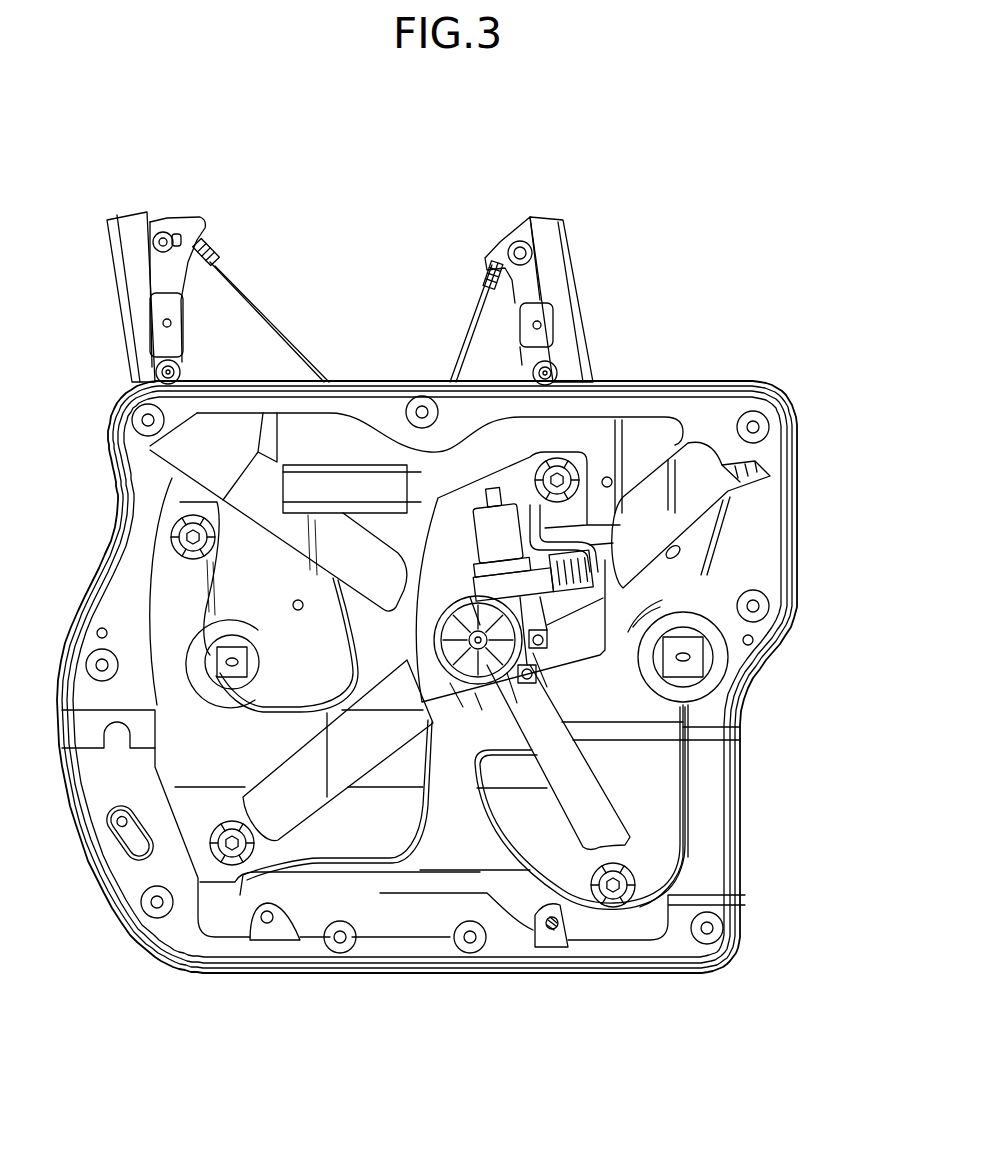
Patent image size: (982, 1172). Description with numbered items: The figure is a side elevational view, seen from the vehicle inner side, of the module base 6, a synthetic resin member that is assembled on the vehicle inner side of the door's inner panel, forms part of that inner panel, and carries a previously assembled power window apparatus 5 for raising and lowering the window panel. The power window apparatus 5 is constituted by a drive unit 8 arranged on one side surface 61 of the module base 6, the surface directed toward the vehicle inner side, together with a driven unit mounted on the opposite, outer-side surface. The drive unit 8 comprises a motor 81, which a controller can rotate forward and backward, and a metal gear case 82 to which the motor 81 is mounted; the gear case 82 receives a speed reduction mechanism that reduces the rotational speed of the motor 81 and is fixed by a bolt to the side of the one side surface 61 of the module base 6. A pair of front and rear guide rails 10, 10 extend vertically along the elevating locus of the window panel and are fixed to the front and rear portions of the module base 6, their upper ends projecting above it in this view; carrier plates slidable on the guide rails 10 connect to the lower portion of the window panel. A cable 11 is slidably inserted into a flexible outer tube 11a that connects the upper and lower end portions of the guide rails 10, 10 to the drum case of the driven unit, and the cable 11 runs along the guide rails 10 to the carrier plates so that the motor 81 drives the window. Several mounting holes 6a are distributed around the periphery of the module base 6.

The power window apparatus 5 is at (580, 680).
The module base 6 is at (805, 515).
The mounting holes 6a is at (140, 415).
The drive unit 8 is at (443, 557).
The motor 81 is at (505, 492).
The gear case 82 is at (440, 662).
The guide rail 10 is at (118, 300).
The cable 11 is at (348, 310).
The outer tube 11a is at (268, 307).
The one side surface 61 is at (633, 440).